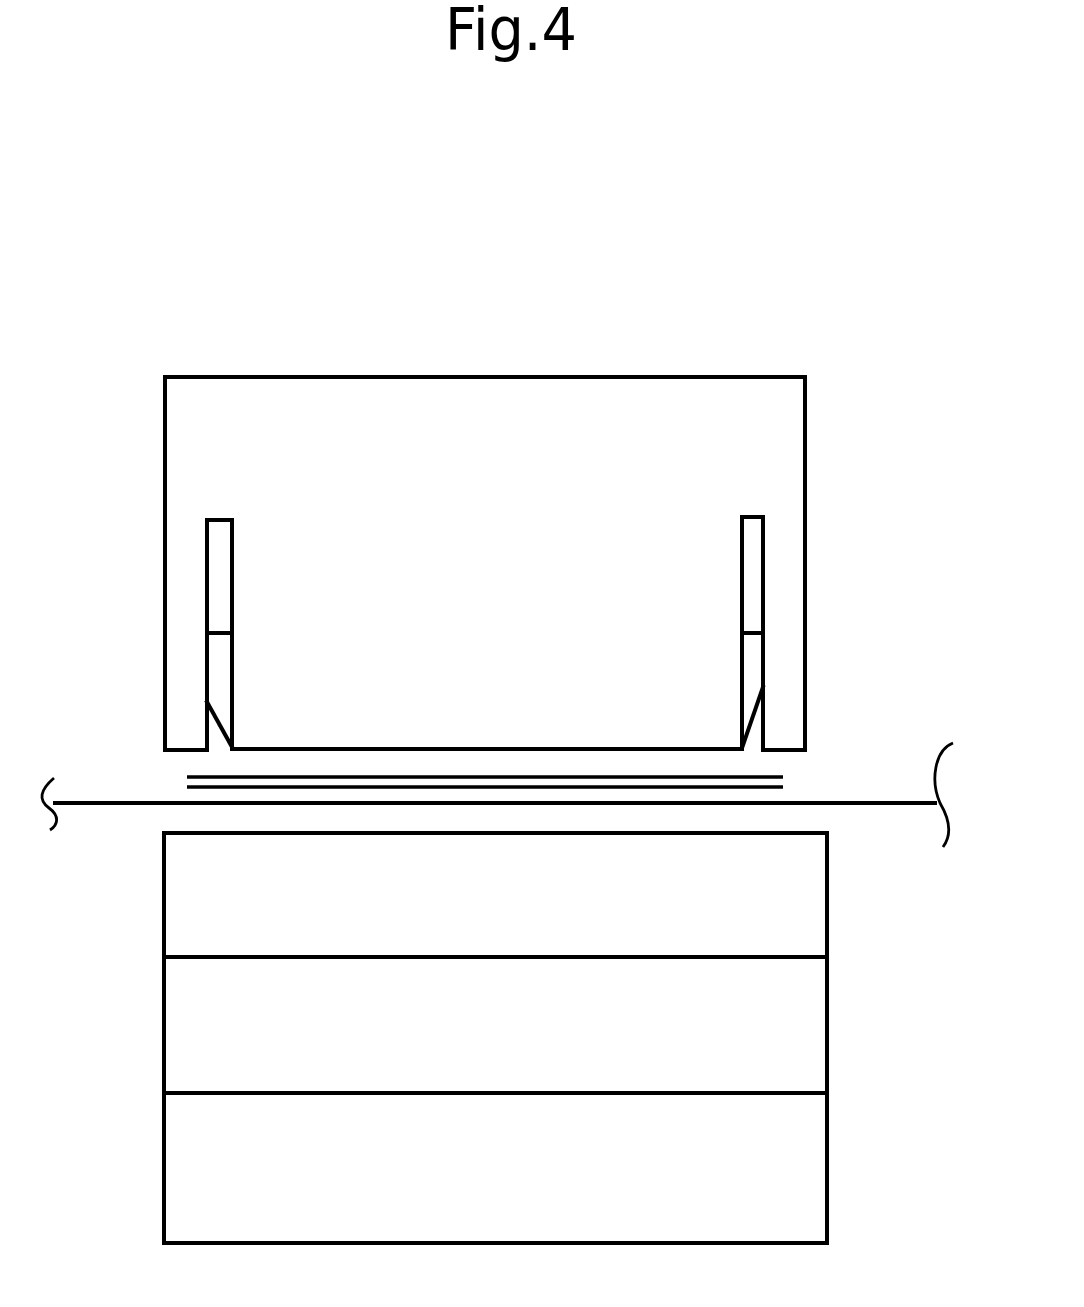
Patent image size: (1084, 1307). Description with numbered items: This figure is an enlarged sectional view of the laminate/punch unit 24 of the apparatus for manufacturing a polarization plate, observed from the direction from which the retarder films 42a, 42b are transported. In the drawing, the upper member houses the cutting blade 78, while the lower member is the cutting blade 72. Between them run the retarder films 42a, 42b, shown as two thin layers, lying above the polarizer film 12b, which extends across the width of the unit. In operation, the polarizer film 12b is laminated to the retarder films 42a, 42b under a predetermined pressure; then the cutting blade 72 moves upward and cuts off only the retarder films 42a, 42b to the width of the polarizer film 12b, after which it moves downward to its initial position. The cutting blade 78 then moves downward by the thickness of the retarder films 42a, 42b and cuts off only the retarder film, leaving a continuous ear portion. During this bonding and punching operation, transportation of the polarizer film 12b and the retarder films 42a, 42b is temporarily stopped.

The laminate/punch unit 24 is at (632, 338).
The cutting blade 78 is at (753, 660).
The retarder film 42b is at (187, 775).
The retarder film 42a is at (205, 790).
The polarizer film 12b is at (130, 807).
The cutting blade 72 is at (803, 902).